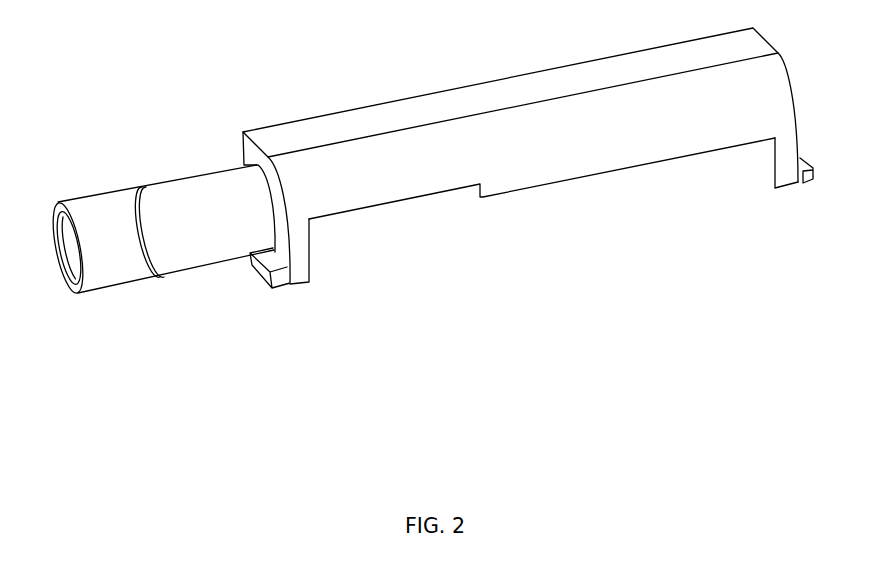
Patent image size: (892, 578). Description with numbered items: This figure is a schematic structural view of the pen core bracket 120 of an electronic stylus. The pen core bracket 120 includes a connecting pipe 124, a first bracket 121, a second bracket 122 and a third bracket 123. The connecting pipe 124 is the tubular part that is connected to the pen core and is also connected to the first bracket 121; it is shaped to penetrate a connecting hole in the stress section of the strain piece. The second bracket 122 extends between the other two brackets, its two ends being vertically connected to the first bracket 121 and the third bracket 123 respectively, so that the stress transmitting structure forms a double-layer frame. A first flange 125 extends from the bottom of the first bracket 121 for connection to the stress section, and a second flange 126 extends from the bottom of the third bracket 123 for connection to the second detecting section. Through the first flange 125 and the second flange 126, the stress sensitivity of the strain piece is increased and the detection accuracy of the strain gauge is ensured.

The pen core bracket 120 is at (755, 302).
The first bracket 121 is at (297, 240).
The second bracket 122 is at (552, 143).
The third bracket 123 is at (792, 150).
The connecting pipe 124 is at (170, 195).
The first flange 125 is at (288, 285).
The second flange 126 is at (805, 183).